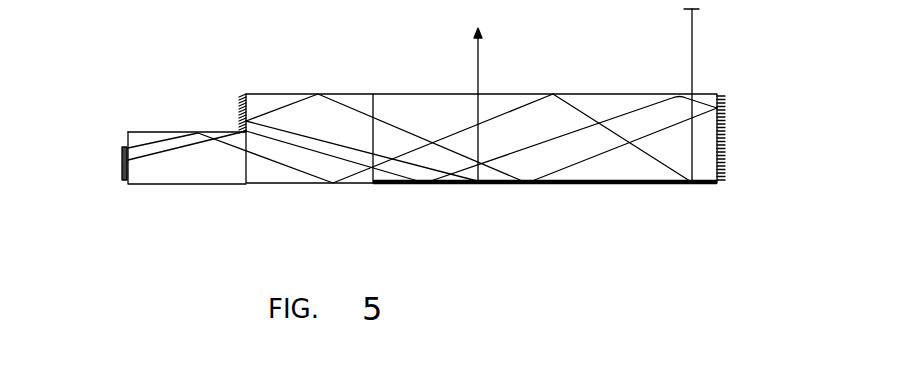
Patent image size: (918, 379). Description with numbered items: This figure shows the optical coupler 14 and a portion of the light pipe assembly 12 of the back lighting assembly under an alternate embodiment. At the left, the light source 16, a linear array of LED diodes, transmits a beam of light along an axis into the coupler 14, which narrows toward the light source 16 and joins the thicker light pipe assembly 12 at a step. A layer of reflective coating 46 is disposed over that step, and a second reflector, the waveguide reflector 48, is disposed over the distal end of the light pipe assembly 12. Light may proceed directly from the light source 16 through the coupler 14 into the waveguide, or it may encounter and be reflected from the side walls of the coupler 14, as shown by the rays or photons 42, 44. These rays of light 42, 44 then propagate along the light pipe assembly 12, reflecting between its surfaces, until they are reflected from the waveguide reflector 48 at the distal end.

The light pipe assembly 12 is at (591, 49).
The optical coupler 14 is at (282, 68).
The light source 16 is at (118, 173).
The ray of light 42 is at (152, 156).
The ray of light 44 is at (163, 138).
The reflective coating 46 is at (239, 115).
The waveguide reflector 48 is at (727, 138).